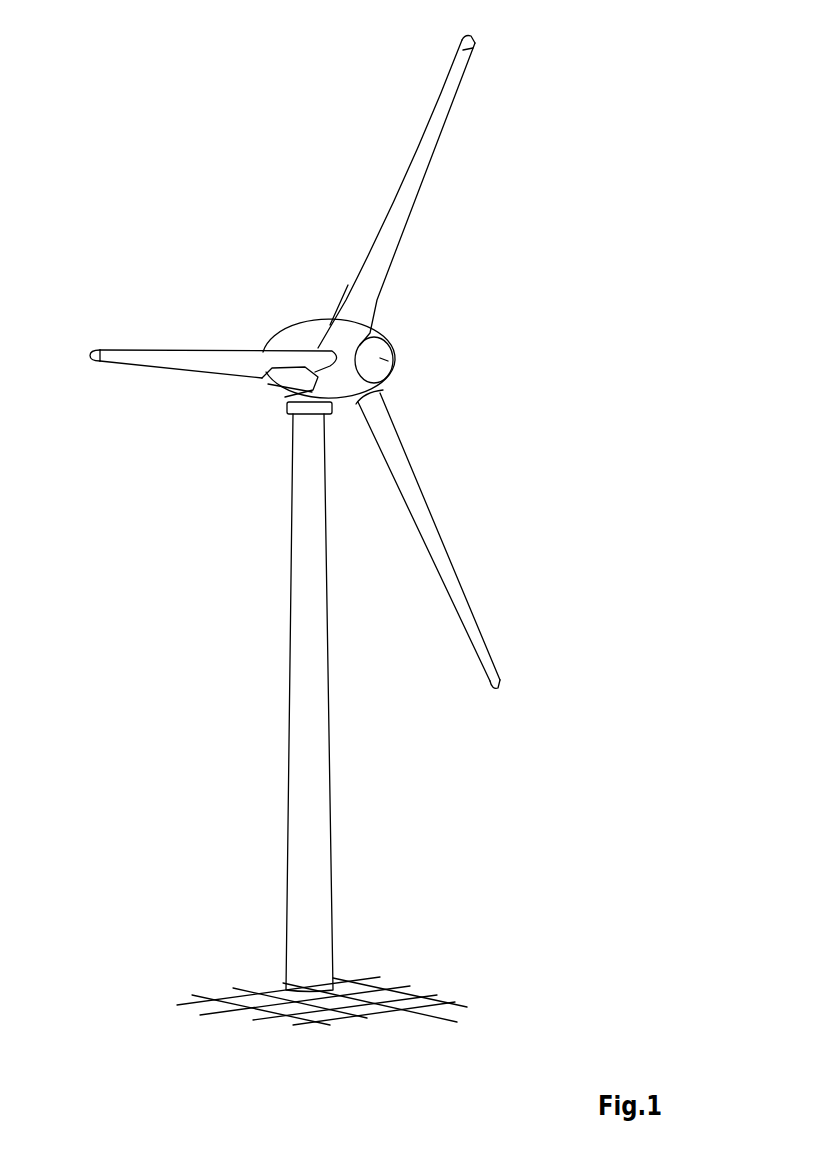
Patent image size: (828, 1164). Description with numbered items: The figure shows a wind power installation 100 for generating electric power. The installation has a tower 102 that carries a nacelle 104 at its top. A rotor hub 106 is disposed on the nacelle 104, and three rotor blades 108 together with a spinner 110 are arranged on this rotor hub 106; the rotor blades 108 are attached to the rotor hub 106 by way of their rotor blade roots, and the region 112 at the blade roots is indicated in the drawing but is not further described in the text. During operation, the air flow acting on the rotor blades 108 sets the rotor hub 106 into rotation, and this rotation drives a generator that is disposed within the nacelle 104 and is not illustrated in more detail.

The wind power installation 100 is at (339, 514).
The tower 102 is at (315, 792).
The nacelle 104 is at (300, 328).
The rotor hub 106 is at (339, 362).
The rotor blades 108 is at (428, 148).
The spinner 110 is at (393, 362).
The pitch adjustment system 112 is at (343, 310).